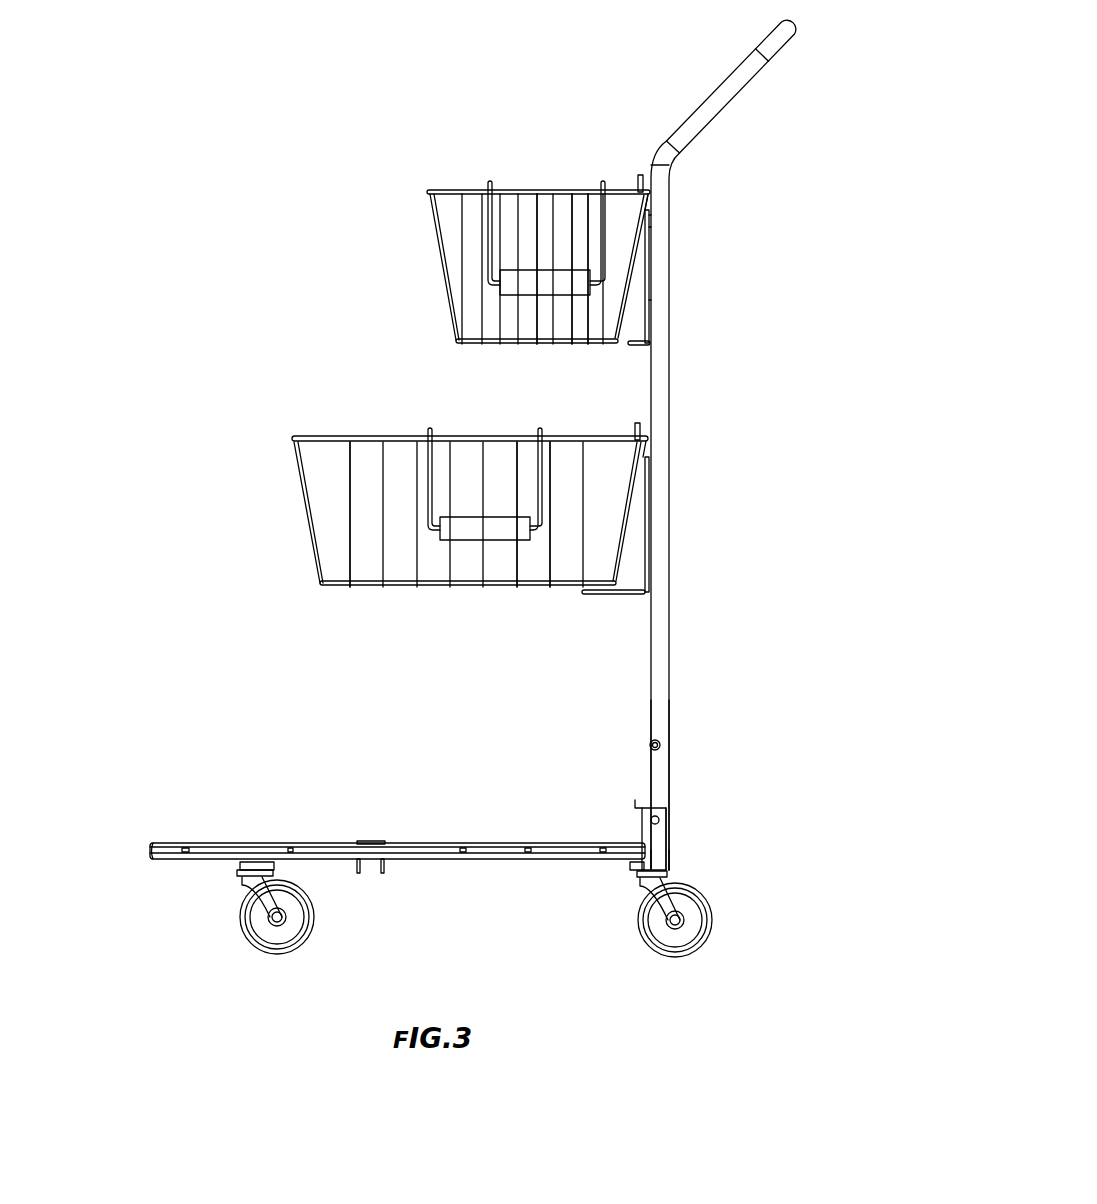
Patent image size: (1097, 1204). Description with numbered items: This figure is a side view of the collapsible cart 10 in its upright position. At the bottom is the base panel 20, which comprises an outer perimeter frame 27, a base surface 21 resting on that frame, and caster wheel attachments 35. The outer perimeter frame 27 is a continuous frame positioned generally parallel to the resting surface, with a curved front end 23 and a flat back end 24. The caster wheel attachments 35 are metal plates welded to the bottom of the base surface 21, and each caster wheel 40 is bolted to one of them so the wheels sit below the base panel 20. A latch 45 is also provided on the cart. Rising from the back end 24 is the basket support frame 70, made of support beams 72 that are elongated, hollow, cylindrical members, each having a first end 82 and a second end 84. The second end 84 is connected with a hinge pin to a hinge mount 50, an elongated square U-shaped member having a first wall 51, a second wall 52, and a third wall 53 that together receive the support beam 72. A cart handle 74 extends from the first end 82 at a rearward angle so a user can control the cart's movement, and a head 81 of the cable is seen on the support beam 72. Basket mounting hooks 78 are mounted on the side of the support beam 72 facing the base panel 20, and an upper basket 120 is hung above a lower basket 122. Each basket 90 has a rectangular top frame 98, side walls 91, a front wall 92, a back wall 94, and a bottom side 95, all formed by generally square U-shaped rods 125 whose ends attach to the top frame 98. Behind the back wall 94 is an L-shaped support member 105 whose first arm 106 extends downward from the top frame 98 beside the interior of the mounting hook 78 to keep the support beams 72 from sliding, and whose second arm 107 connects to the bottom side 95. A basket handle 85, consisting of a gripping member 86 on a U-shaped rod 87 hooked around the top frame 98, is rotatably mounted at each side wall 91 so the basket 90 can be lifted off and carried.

The collapsible cart 10 is at (325, 118).
The base panel 20 is at (135, 860).
The base surface 21 is at (320, 845).
The front end 23 is at (150, 848).
The back end 24 is at (674, 878).
The outer perimeter frame 27 is at (500, 860).
The caster wheel attachment 35 is at (255, 862).
The caster wheel 40 is at (300, 915).
The latch 45 is at (380, 840).
The hinge mount 50 is at (668, 845).
The first wall 51 is at (666, 832).
The second wall 52 is at (657, 826).
The third wall 53 is at (635, 800).
The basket support frame 70 is at (850, 438).
The support beam 72 is at (667, 395).
The cart handle 74 is at (703, 103).
The basket mounting hook 78 is at (651, 186).
The head 81 is at (661, 745).
The first end 82 is at (680, 172).
The second end 84 is at (672, 858).
The basket handle 85 is at (585, 344).
The gripping member 86 is at (535, 322).
The U-shaped rod 87 is at (489, 265).
The basket 90 is at (430, 191).
The side wall 91 is at (490, 283).
The front wall 92 is at (478, 246).
The back wall 94 is at (631, 262).
The bottom side 95 is at (505, 346).
The top frame 98 is at (455, 190).
The support member 105 is at (649, 340).
The first arm 106 is at (650, 303).
The second arm 107 is at (638, 353).
The upper basket 120 is at (432, 210).
The lower basket 122 is at (298, 483).
The U-shaped rod 125 is at (540, 215).